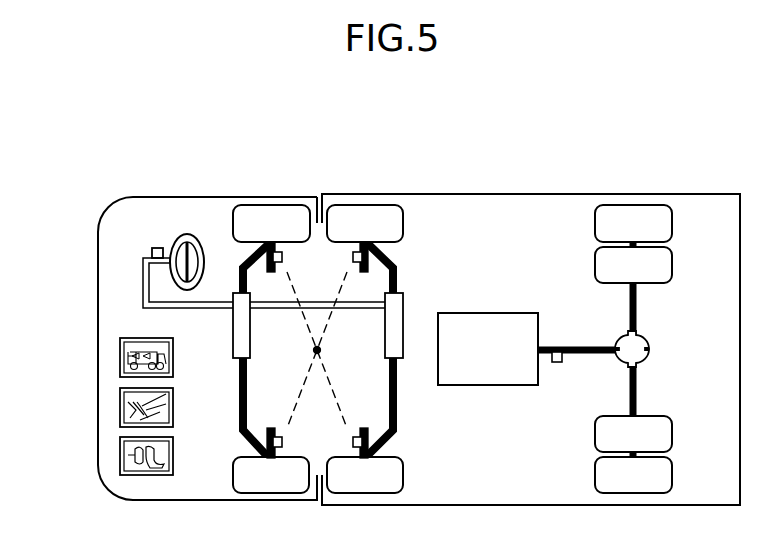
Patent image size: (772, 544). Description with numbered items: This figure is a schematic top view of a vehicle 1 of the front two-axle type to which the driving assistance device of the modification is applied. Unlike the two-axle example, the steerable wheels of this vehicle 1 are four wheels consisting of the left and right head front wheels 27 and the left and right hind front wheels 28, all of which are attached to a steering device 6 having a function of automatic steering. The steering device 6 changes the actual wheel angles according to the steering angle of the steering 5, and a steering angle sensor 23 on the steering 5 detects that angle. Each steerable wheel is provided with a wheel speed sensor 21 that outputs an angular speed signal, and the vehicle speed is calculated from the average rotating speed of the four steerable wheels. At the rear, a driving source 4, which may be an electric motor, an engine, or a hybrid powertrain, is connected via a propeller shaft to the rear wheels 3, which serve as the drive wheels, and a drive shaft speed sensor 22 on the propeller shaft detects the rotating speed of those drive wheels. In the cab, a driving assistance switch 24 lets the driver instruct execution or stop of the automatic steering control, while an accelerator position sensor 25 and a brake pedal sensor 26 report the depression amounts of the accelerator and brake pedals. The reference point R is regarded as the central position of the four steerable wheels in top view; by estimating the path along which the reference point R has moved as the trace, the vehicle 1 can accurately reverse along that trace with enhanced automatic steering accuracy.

The vehicle 1 is at (84, 182).
The rear wheels 3 is at (633, 204).
The driving source 4 is at (488, 312).
The steering 5 is at (203, 246).
The steering device 6 is at (233, 344).
The wheel speed sensors 21 is at (352, 257).
The drive shaft speed sensor 22 is at (562, 362).
The steering angle sensor 23 is at (158, 247).
The driving assistance switch 24 is at (120, 360).
The accelerator position sensor 25 is at (120, 409).
The brake pedal sensor 26 is at (120, 457).
The head front wheels 27 is at (280, 204).
The hind front wheels 28 is at (384, 204).
The reference point R is at (317, 350).